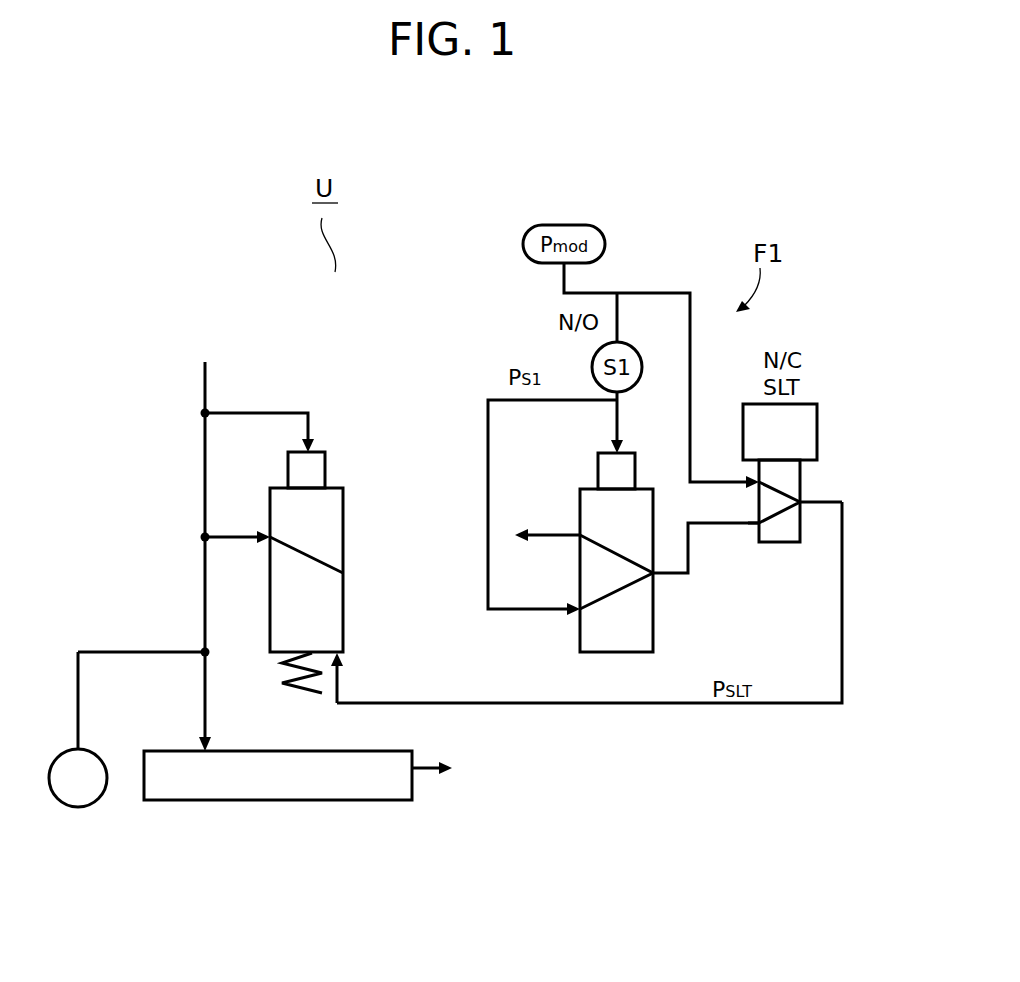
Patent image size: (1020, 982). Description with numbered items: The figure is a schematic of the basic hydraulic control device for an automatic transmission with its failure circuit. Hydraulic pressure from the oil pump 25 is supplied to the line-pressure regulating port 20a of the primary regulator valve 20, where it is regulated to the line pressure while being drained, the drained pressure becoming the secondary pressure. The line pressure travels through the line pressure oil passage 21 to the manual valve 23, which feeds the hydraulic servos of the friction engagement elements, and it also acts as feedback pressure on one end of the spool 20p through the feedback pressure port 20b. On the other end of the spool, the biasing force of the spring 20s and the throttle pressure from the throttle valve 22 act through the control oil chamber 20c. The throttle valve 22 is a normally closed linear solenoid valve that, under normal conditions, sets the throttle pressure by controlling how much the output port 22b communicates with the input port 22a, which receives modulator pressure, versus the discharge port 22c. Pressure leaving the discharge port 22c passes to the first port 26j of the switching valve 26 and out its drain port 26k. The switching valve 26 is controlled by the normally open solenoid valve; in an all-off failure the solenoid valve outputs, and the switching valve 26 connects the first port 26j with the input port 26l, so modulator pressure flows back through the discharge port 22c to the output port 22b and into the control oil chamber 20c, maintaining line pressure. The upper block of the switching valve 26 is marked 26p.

The primary regulator valve 20 is at (373, 416).
The line-pressure regulating port 20a is at (270, 534).
The feedback pressure port 20b is at (321, 448).
The control oil chamber 20c is at (343, 656).
The spool 20p is at (327, 475).
The spring 20s is at (297, 692).
The line pressure oil passage 21 is at (204, 388).
The throttle valve 22 is at (838, 402).
The input port 22a is at (757, 471).
The output port 22b is at (802, 500).
The discharge port 22c is at (758, 527).
The manual valve 23 is at (258, 802).
The oil pump 25 is at (70, 752).
The switching valve 26 is at (584, 475).
The first port 26j is at (655, 580).
The drain port 26k is at (578, 532).
The input port 26l is at (577, 613).
The plunger 26p is at (637, 472).